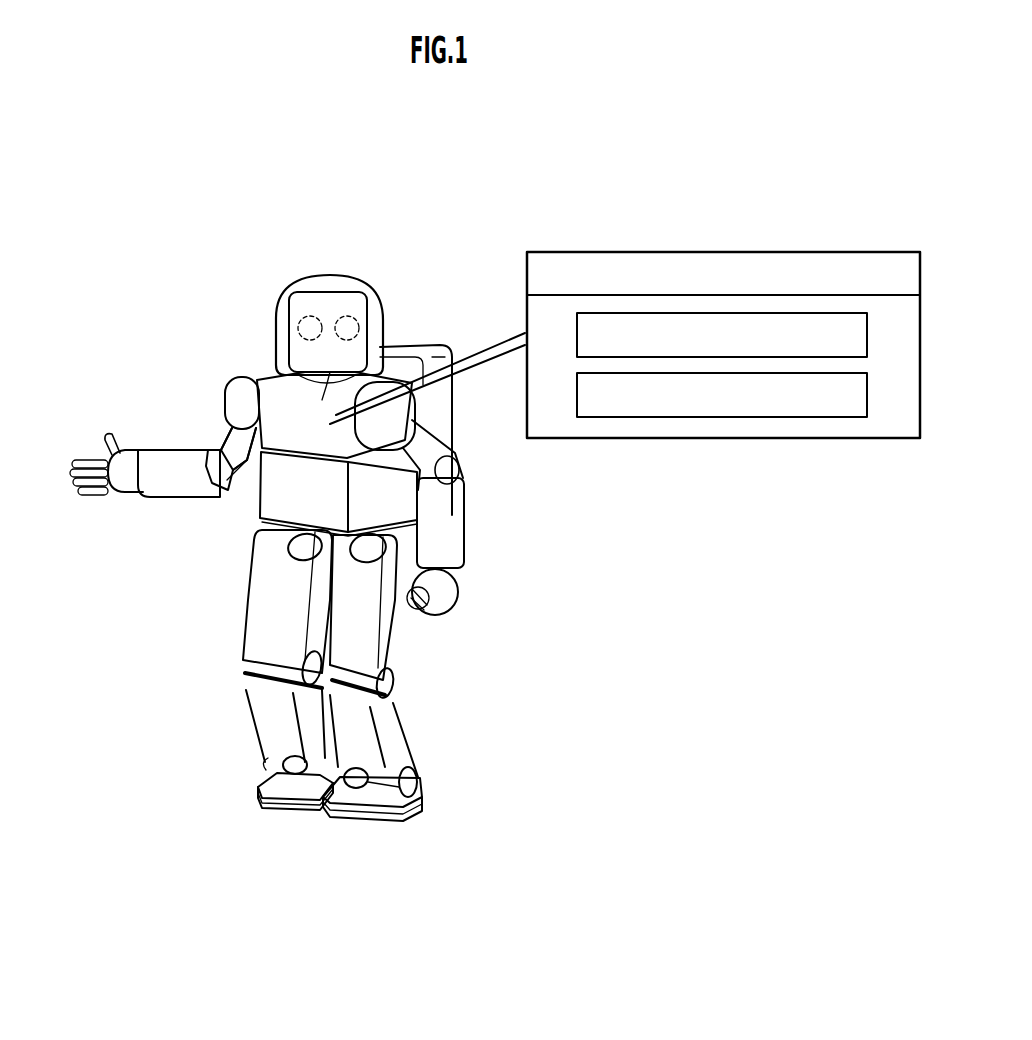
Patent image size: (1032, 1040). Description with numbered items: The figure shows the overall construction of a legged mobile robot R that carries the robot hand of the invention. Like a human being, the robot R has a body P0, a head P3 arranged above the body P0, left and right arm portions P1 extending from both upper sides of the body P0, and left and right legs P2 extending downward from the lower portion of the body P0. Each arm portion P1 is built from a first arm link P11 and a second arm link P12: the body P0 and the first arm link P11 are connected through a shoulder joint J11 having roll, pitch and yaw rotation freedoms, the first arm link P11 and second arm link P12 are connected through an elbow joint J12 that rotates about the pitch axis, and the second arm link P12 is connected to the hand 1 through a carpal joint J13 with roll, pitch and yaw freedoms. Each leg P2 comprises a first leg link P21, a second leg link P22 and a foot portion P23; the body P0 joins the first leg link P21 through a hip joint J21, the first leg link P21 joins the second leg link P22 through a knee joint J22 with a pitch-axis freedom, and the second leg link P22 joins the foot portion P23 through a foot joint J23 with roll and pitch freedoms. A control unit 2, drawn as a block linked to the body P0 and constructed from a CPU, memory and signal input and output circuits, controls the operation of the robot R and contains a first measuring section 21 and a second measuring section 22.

The hand 1 is at (68, 440).
The robot R is at (464, 258).
The control unit 2 is at (723, 252).
The first measuring section 21 is at (867, 335).
The second measuring section 22 is at (867, 395).
The body P0 is at (318, 500).
The arm portion P1 is at (130, 348).
The leg P2 is at (495, 694).
The head P3 is at (372, 265).
The shoulder joint J11 is at (232, 368).
The elbow joint J12 is at (205, 438).
The carpal joint J13 is at (137, 437).
The first arm link P11 is at (247, 490).
The second arm link P12 is at (177, 487).
The hip joint J21 is at (405, 538).
The knee joint J22 is at (408, 683).
The foot joint J23 is at (426, 767).
The first leg link P21 is at (398, 613).
The second leg link P22 is at (395, 730).
The foot portion P23 is at (388, 825).